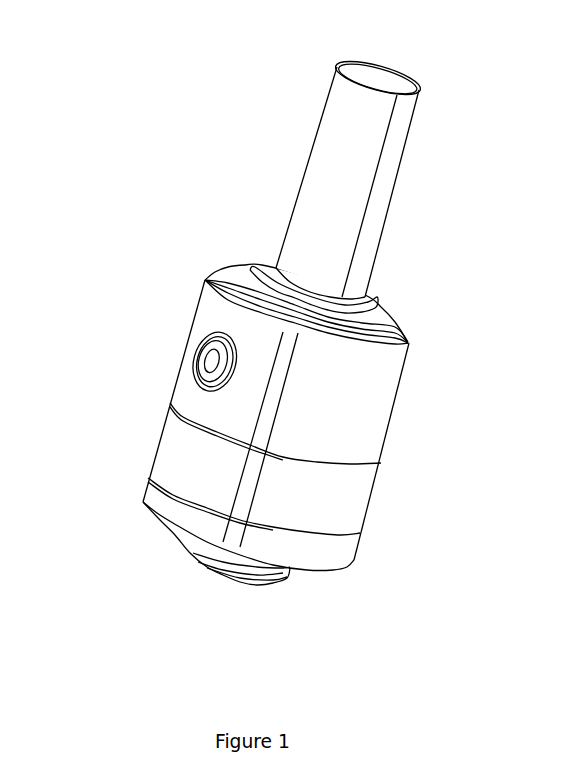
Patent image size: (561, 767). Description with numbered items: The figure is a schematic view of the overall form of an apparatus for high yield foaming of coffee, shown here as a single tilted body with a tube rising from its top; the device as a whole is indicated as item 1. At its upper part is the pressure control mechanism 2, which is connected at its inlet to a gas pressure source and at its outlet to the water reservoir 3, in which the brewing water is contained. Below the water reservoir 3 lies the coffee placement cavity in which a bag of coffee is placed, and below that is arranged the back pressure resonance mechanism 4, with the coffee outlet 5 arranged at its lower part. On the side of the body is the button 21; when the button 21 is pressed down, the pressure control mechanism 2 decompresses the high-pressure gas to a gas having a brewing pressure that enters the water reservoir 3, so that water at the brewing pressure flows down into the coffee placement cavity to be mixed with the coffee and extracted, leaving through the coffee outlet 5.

The atomizer device 1 is at (256, 342).
The pressure control mechanism 2 is at (415, 408).
The water reservoir 3 is at (137, 428).
The back pressure resonance mechanism 4 is at (127, 485).
The coffee outlet 5 is at (222, 590).
The button 21 is at (195, 350).